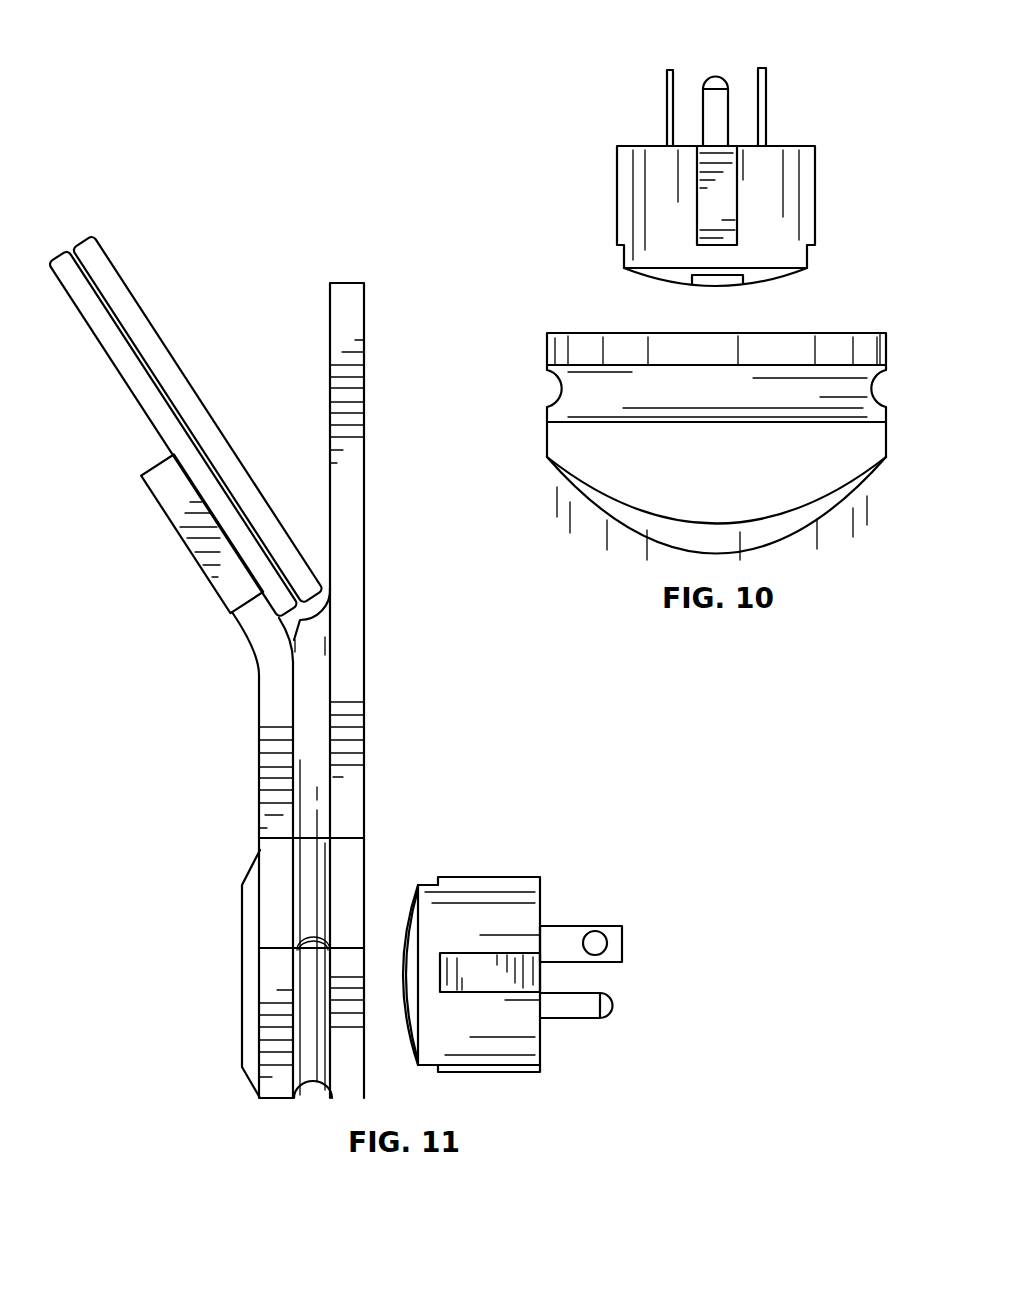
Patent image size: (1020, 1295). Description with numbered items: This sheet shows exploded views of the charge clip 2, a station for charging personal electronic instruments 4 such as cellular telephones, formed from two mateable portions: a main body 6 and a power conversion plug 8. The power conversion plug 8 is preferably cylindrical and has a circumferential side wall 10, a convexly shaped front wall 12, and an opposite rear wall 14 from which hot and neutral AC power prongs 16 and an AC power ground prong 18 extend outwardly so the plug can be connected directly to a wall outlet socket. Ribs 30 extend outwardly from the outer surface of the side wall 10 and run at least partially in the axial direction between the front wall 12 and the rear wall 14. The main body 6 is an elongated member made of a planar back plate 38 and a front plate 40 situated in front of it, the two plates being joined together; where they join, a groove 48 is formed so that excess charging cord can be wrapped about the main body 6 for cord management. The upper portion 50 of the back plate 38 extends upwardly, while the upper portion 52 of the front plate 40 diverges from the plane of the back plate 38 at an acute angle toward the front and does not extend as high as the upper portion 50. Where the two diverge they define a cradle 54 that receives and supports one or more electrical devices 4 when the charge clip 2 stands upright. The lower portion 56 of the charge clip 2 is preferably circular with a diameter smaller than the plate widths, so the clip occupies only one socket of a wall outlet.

In FIG. 11, the charge clip 2 is at (198, 210).
In FIG. 11, the personal electronic instrument 4 is at (122, 280).
In FIG. 10, the main body 6 is at (858, 540).
In FIG. 11, the main body 6 is at (114, 731).
In FIG. 11, the power conversion plug 8 is at (554, 856).
In FIG. 11, the circumferential side wall 10 is at (430, 878).
In FIG. 11, the front wall 12 is at (408, 903).
In FIG. 11, the rear wall 14 is at (542, 1057).
In FIG. 10, the hot and neutral AC power prongs 16 is at (667, 70).
In FIG. 11, the hot and neutral AC power prongs 16 is at (622, 930).
In FIG. 10, the AC power ground prong 18 is at (713, 75).
In FIG. 11, the AC power ground prong 18 is at (613, 1004).
In FIG. 10, the ribs 30 is at (815, 177).
In FIG. 11, the ribs 30 is at (492, 877).
In FIG. 11, the back plate 38 is at (364, 522).
In FIG. 11, the front plate 40 is at (257, 682).
In FIG. 11, the groove 48 is at (313, 1084).
In FIG. 11, the upper portion of the back plate 50 is at (364, 305).
In FIG. 11, the upper portion of the front plate 52 is at (152, 497).
In FIG. 11, the cradle 54 is at (272, 384).
In FIG. 11, the lower portion 56 is at (262, 1102).